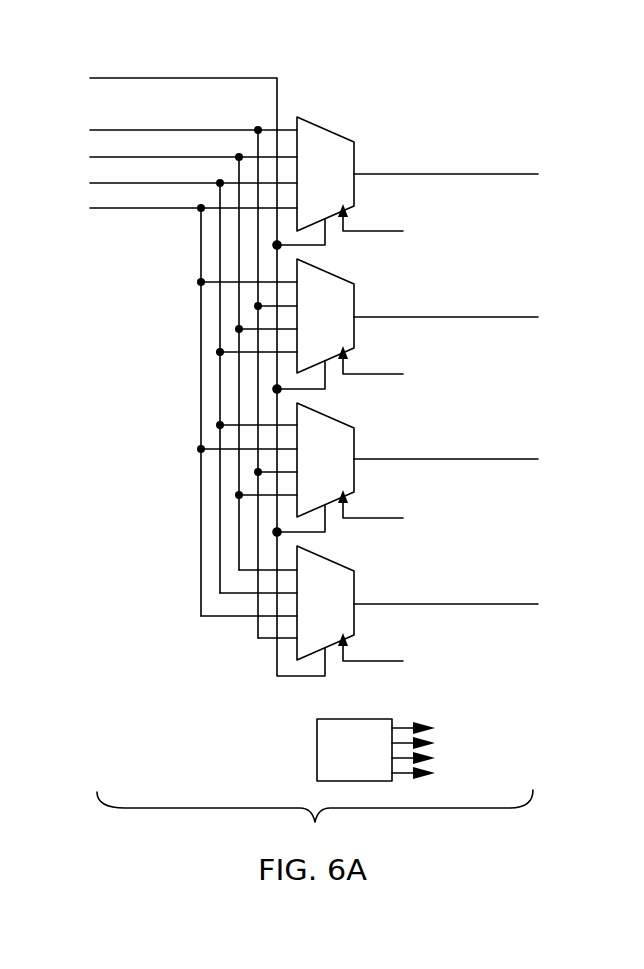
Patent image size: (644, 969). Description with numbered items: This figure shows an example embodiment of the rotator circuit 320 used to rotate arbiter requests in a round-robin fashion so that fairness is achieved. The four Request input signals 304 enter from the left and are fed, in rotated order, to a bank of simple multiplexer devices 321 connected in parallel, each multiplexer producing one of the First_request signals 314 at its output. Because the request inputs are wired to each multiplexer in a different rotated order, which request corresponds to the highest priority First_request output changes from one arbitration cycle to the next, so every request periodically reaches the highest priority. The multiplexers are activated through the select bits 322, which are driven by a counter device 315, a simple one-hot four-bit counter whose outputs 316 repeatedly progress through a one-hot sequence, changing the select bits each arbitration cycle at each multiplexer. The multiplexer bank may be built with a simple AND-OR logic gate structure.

The rotator circuit 320 is at (368, 28).
The select bits 322 is at (220, 78).
The request input signals 304 is at (82, 71).
The multiplexer devices 321 is at (307, 75).
The First_request signals 314 is at (543, 152).
The counter device 315 is at (328, 758).
The counter outputs 316 is at (450, 719).